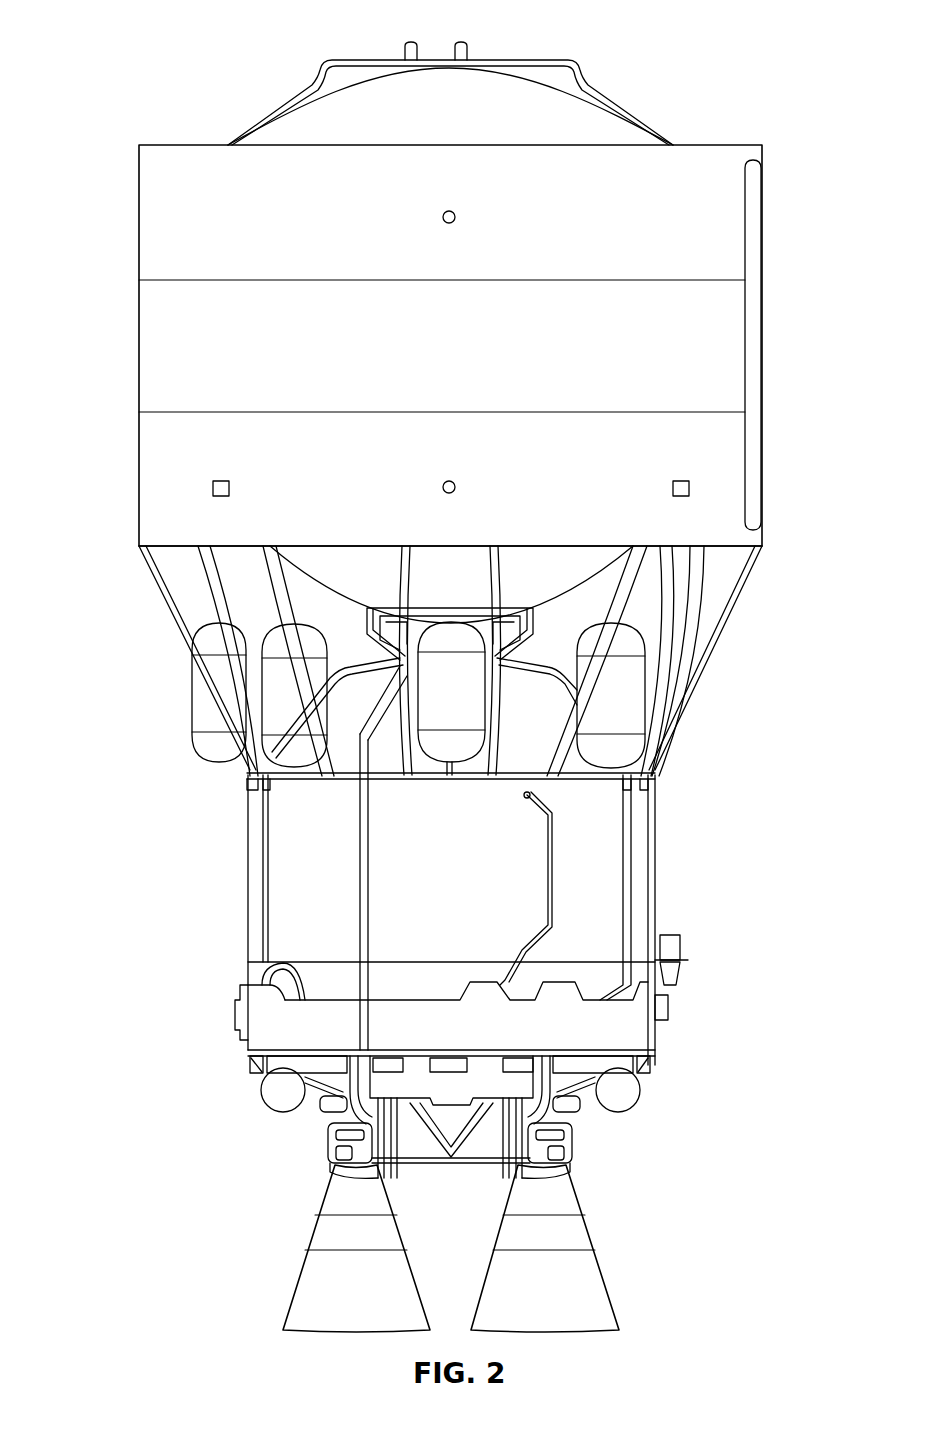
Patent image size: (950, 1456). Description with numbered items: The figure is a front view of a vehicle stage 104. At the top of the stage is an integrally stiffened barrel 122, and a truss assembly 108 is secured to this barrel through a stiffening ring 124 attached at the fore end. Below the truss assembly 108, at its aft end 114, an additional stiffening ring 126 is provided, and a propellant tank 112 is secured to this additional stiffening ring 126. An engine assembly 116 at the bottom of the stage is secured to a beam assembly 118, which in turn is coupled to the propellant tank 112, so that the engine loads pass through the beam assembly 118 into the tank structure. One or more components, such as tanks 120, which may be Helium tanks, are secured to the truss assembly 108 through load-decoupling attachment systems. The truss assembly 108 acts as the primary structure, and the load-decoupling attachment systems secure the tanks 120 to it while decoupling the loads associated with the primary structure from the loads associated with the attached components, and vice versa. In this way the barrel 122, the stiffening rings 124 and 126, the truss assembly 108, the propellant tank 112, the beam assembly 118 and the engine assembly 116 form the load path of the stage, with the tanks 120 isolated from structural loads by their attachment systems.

The vehicle stage 104 is at (118, 49).
The truss assembly 108 is at (740, 600).
The propellant tank 112 is at (613, 878).
The aft end 114 is at (385, 770).
The engine assembly 116 is at (602, 1246).
The beam assembly 118 is at (633, 1035).
The tanks 120 is at (198, 712).
The integrally stiffened barrel 122 is at (728, 478).
The stiffening ring 124 is at (715, 548).
The additional stiffening ring 126 is at (607, 767).